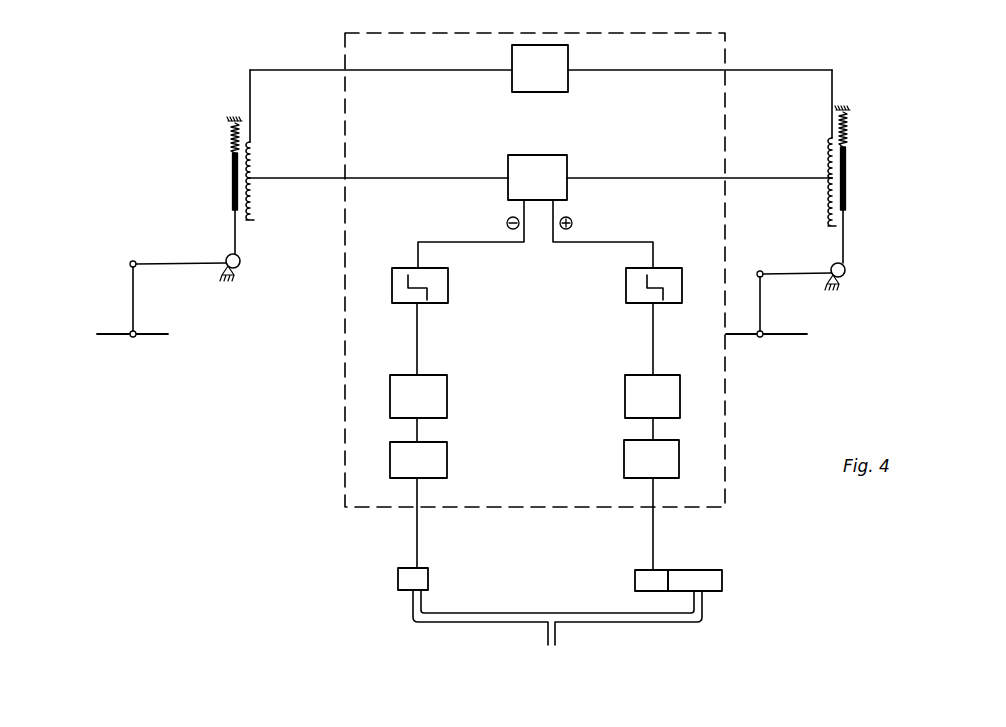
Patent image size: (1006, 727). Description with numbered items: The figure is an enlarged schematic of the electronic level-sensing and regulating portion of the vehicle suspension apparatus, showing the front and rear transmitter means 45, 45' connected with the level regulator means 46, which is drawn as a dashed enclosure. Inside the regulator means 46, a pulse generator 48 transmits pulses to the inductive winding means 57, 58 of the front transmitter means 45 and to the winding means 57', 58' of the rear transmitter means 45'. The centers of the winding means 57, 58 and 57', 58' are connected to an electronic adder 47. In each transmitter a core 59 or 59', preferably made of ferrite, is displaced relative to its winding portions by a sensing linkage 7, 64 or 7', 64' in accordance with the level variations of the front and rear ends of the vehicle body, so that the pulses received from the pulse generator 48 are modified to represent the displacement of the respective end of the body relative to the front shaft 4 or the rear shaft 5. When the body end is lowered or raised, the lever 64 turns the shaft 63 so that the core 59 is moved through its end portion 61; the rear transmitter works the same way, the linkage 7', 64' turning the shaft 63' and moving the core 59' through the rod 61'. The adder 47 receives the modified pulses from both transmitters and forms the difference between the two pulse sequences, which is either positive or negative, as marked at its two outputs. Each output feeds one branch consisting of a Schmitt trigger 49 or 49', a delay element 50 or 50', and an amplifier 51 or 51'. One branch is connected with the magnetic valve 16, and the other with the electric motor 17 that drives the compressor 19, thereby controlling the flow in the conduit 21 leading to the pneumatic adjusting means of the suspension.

The front shaft 4 is at (150, 335).
The rear shaft 5 is at (778, 335).
The sensing linkage 7 is at (115, 299).
The sensing linkage 7' is at (784, 304).
The magnetic valve 16 is at (428, 575).
The electric motor 17 is at (648, 580).
The compressor 19 is at (715, 570).
The conduit 21 is at (585, 614).
The front transmitter means 45 is at (216, 109).
The rear transmitter means 45' is at (874, 122).
The level regulator means 46 is at (728, 52).
The electronic adder 47 is at (558, 170).
The pulse generator 48 is at (560, 65).
The Schmitt trigger 49 is at (439, 285).
The Schmitt trigger 49' is at (631, 285).
The delay element 50 is at (437, 396).
The delay element 50' is at (631, 396).
The amplifier 51 is at (437, 460).
The amplifier 51' is at (630, 459).
The inductive winding means 57 is at (272, 148).
The inductive winding means 57' is at (815, 155).
The inductive winding means 58 is at (272, 199).
The inductive winding means 58' is at (816, 202).
The core 59 is at (209, 181).
The core 59' is at (871, 178).
The end portion 61 is at (266, 232).
The rod 61' is at (873, 236).
The shaft 63 is at (258, 271).
The shaft 63' is at (864, 278).
The lever 64 is at (178, 249).
The lever 64' is at (794, 259).